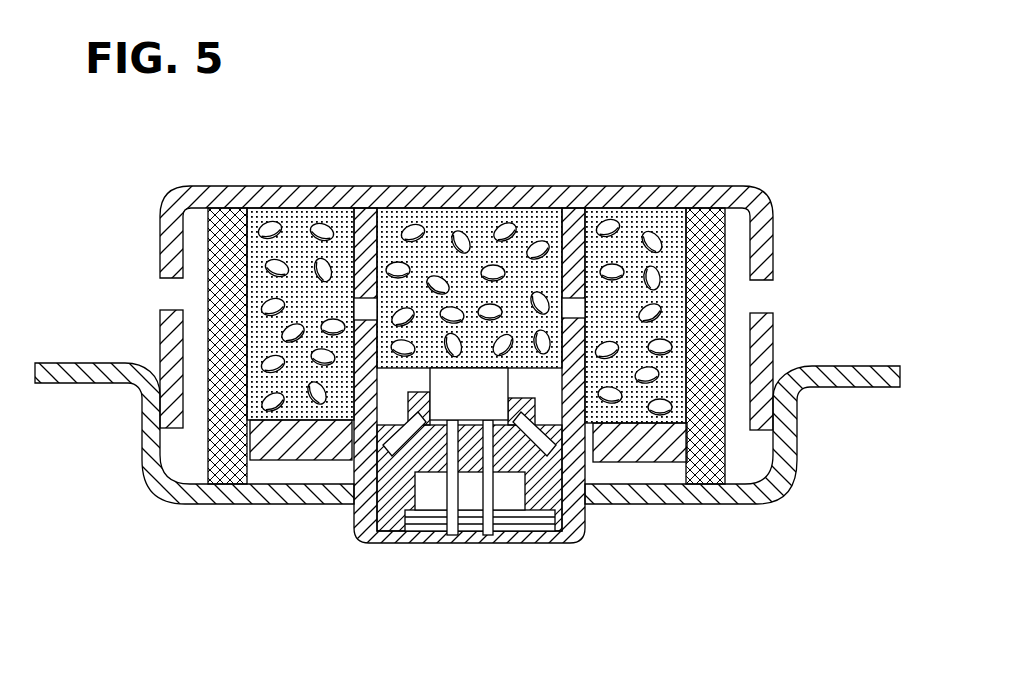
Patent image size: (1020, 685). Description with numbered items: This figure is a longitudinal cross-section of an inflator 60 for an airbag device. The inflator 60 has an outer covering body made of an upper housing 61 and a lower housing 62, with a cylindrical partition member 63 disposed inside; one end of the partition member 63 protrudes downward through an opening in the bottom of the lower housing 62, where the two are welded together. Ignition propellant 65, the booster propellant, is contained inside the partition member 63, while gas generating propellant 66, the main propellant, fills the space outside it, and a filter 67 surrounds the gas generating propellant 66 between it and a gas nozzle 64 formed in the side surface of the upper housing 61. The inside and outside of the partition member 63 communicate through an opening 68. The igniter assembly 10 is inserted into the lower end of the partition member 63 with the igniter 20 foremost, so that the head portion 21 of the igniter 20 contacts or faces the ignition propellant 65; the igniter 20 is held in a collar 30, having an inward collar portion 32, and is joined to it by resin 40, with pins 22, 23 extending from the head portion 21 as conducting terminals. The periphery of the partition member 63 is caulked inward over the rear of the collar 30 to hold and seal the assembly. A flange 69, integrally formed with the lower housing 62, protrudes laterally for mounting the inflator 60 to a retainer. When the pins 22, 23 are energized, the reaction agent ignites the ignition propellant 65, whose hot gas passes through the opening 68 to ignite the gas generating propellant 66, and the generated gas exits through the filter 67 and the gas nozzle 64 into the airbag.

The igniter assembly 10 is at (526, 560).
The igniter 20 is at (478, 400).
The head portion 21 is at (508, 377).
The pin 22 is at (455, 542).
The pin 23 is at (490, 543).
The collar 30 is at (405, 545).
The collar portion 32 is at (471, 494).
The resin 40 is at (420, 392).
The inflator 60 is at (592, 132).
The upper housing 61 is at (745, 190).
The lower housing 62 is at (773, 506).
The partition member 63 is at (368, 208).
The gas nozzle 64 is at (163, 297).
The ignition propellant 65 is at (442, 215).
The gas generating propellant 66 is at (300, 208).
The filter 67 is at (200, 236).
The opening 68 is at (352, 308).
The flange 69 is at (88, 385).